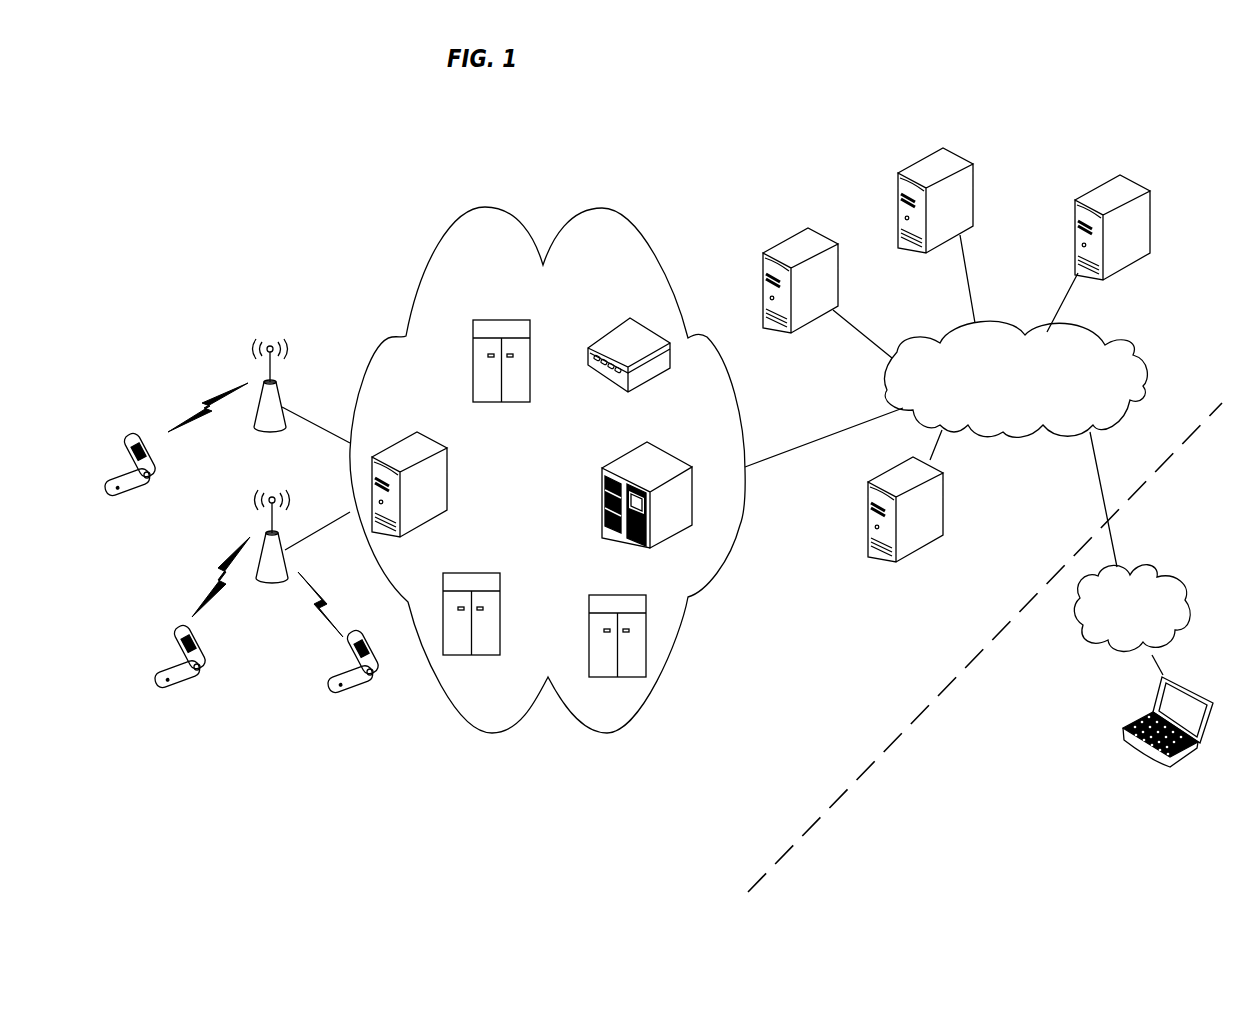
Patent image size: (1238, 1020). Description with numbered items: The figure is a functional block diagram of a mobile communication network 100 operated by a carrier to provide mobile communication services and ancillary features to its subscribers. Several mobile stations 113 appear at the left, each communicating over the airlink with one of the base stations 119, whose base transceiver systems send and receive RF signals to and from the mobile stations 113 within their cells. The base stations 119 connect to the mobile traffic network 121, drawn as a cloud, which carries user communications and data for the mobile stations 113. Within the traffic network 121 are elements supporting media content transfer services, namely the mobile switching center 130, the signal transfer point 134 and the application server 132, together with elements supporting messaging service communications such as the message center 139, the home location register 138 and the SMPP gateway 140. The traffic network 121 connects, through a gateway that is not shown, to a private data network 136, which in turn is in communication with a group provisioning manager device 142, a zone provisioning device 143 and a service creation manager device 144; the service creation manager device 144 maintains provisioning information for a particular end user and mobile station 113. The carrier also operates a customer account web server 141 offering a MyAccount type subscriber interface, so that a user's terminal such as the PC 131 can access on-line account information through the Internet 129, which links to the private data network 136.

The mobile communication network 100 is at (270, 169).
The mobile station 113 is at (165, 460).
The base station 119 is at (273, 378).
The mobile traffic network 121 is at (430, 260).
The Internet 129 is at (1085, 632).
The mobile switching center 130 is at (396, 438).
The PC 131 is at (1127, 743).
The application server 132 is at (473, 351).
The signal transfer point 134 is at (589, 627).
The private data network 136 is at (1138, 350).
The home location register 138 is at (670, 460).
The message center 139 is at (472, 572).
The SMPP gateway 140 is at (602, 335).
The customer account web server 141 is at (1132, 278).
The group provisioning manager device 142 is at (937, 253).
The zone provisioning device 143 is at (802, 328).
The service creation manager device 144 is at (943, 518).